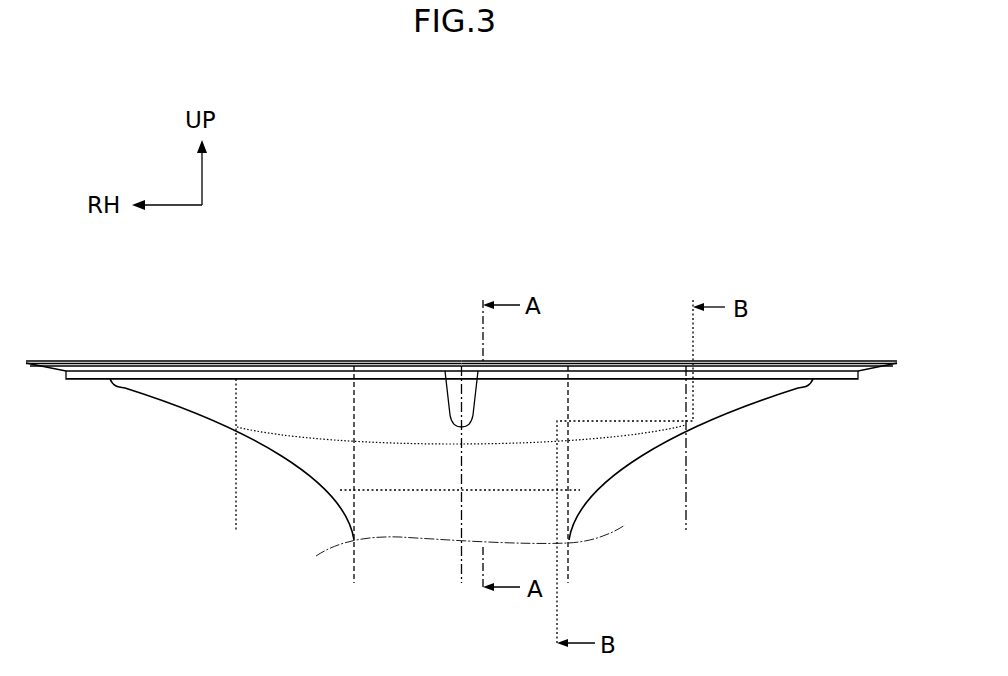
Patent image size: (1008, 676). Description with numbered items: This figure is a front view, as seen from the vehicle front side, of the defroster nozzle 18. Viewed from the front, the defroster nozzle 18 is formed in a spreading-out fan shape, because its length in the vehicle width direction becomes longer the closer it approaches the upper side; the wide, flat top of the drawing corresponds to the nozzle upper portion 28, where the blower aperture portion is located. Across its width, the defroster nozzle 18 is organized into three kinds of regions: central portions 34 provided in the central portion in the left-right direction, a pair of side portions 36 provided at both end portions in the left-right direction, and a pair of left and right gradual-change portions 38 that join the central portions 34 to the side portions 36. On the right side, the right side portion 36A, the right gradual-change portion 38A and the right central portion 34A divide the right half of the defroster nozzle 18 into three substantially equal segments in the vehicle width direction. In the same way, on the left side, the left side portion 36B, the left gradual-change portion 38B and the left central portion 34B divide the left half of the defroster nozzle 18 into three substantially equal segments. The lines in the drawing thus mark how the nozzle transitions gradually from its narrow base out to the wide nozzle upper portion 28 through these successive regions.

The defroster nozzle 18 is at (810, 358).
The nozzle upper portion 28 is at (165, 402).
The central portions 34 is at (470, 288).
The right central portion 34A is at (413, 361).
The left central portion 34B is at (538, 361).
The side portions 36 is at (461, 290).
The right side portion 36A is at (122, 361).
The left side portion 36B is at (748, 361).
The gradual-change portions 38 is at (465, 311).
The right gradual-change portion 38A is at (287, 361).
The left gradual-change portion 38B is at (622, 361).